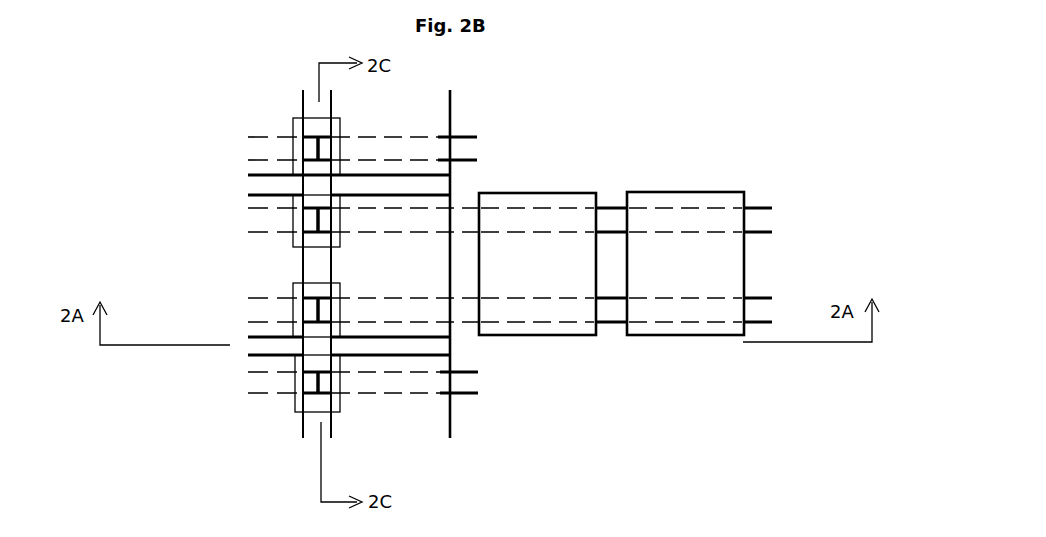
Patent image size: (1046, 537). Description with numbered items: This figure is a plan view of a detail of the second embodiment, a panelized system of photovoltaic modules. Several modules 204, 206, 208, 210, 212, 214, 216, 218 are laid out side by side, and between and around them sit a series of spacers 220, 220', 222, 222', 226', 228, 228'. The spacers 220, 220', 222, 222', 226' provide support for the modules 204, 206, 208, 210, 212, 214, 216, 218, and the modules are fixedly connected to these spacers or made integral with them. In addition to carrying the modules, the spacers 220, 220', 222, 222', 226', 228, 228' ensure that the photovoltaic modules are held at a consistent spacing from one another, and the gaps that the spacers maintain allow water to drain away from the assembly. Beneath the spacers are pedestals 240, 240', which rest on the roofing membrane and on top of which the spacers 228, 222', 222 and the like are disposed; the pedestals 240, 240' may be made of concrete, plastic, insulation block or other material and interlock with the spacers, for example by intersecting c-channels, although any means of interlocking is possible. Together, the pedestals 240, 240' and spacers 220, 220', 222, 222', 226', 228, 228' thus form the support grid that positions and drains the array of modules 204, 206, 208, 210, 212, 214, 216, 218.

The module 204 is at (277, 262).
The module 206 is at (438, 245).
The module 208 is at (517, 245).
The module 210 is at (660, 247).
The module 212 is at (277, 420).
The module 214 is at (397, 410).
The module 216 is at (395, 119).
The module 218 is at (277, 121).
The spacer 220 is at (240, 326).
The spacer 220' is at (258, 228).
The spacer 222 is at (642, 359).
The spacer 222' is at (628, 191).
The spacer 226' is at (240, 394).
The spacer 228 is at (487, 272).
The spacer 228' is at (240, 165).
The pedestal 240 is at (355, 409).
The pedestal 240' is at (254, 229).